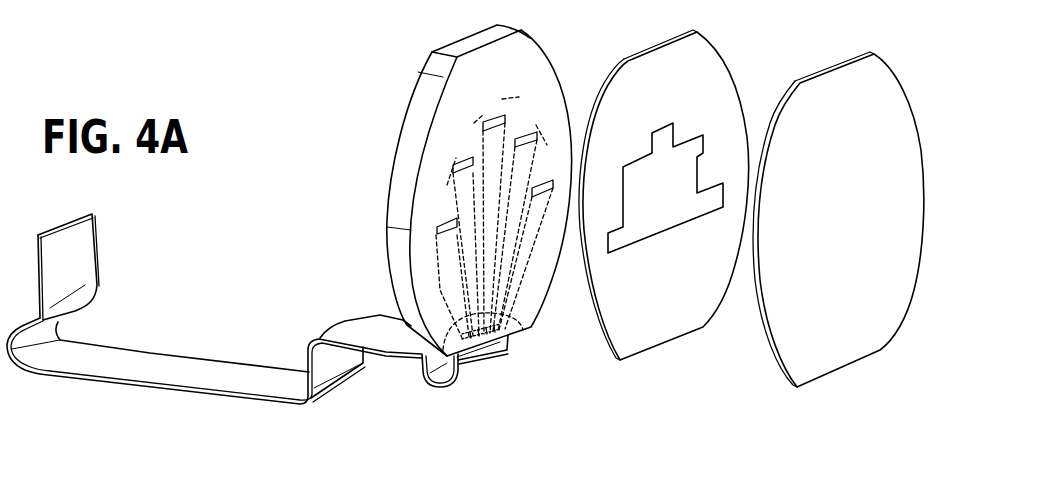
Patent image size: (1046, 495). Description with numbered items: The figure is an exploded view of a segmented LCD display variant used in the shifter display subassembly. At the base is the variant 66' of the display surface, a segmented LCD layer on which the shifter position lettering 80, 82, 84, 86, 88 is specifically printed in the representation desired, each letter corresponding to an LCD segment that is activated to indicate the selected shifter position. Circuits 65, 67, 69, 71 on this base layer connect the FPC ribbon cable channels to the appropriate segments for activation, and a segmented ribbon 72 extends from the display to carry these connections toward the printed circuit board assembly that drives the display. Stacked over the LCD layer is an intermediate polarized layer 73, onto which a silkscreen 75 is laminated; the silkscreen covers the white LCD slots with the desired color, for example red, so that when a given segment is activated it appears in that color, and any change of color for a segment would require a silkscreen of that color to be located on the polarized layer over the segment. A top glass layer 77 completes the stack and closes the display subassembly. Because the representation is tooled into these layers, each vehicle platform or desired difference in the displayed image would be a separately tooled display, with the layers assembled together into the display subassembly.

The display surface variant 66' is at (450, 190).
The shifter position lettering 80 is at (442, 205).
The shifter position lettering 82 is at (456, 133).
The shifter position lettering 84 is at (486, 98).
The shifter position lettering 86 is at (524, 101).
The shifter position lettering 88 is at (554, 148).
The circuit 65 is at (433, 282).
The circuit 71 is at (523, 330).
The circuit 69 is at (506, 347).
The circuit 67 is at (443, 383).
The segmented ribbon 72 is at (157, 362).
The polarized layer 73 is at (646, 337).
The silkscreen 75 is at (663, 221).
The top glass layer 77 is at (832, 345).